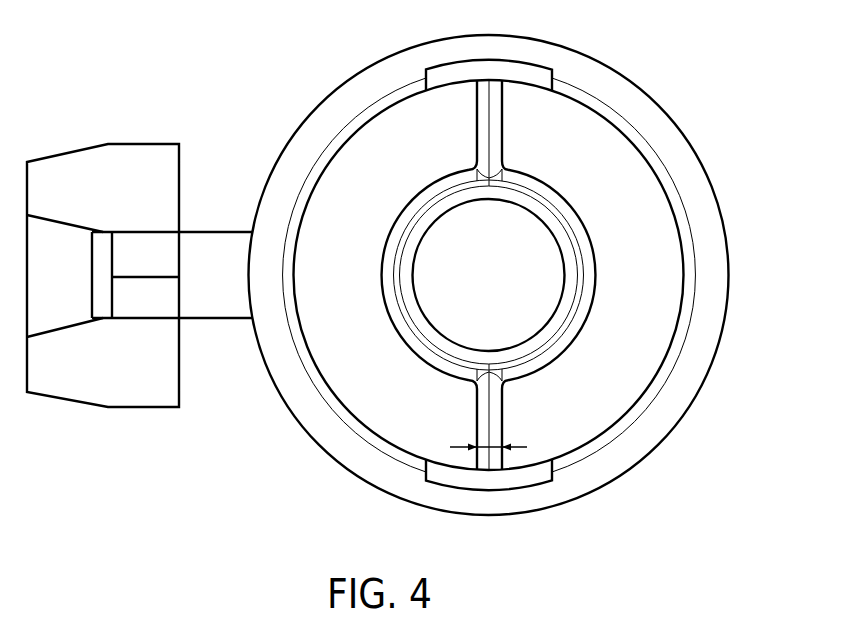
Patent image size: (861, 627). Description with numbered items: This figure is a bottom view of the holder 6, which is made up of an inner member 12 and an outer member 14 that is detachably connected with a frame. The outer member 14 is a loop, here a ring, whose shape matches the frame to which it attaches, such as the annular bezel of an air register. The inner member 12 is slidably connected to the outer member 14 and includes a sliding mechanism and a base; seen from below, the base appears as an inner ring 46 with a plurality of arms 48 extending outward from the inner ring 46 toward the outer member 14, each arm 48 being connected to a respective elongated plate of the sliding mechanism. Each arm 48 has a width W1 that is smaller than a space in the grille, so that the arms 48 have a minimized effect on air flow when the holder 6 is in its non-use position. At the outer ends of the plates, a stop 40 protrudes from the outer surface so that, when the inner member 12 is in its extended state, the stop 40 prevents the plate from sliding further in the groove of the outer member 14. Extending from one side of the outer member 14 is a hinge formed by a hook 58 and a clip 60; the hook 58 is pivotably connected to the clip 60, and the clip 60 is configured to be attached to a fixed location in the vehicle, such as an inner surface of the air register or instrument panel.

The holder 6 is at (781, 301).
The outer member 14 is at (650, 97).
The stop 40 is at (515, 483).
The inner member 12 is at (593, 302).
The inner ring 46 is at (566, 209).
The arms 48 is at (488, 121).
The width W1 is at (499, 431).
The hook 58 is at (212, 250).
The clip 60 is at (63, 177).